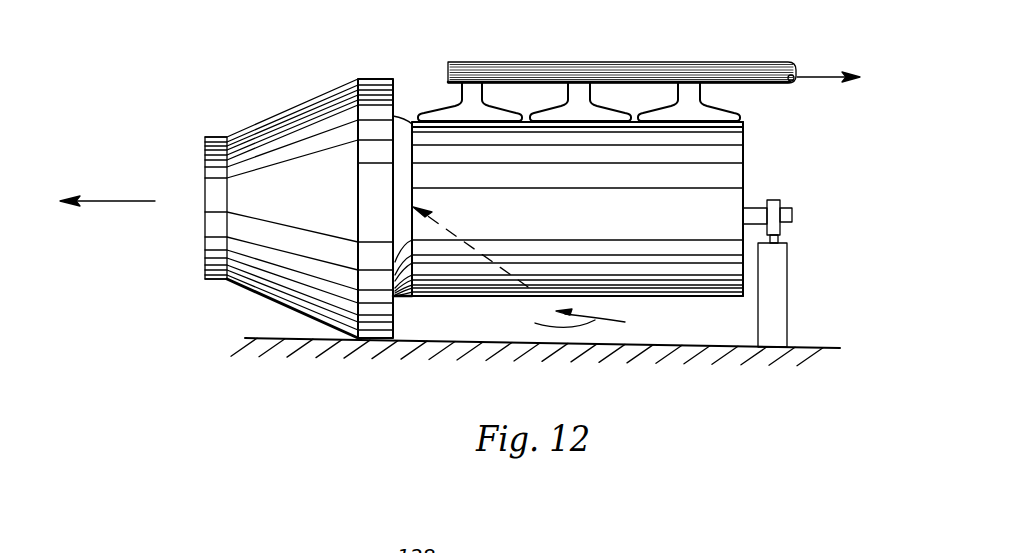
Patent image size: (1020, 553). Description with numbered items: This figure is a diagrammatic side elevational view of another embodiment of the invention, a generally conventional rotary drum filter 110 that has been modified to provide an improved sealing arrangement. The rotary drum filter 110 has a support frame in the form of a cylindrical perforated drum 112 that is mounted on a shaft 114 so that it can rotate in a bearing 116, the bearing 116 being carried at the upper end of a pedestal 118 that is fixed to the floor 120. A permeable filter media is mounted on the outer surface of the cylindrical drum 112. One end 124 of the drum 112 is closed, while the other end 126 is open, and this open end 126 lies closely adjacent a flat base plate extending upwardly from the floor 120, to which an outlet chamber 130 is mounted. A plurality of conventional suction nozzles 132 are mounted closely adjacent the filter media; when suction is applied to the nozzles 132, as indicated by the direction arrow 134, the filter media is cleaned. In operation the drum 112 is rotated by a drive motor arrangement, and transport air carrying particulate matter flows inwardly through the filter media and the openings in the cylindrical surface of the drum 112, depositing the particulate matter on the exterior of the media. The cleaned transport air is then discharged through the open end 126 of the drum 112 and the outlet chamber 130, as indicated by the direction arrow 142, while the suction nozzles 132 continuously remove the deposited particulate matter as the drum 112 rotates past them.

The rotary drum filter 110 is at (406, 74).
The cylindrical perforated drum 112 is at (743, 131).
The shaft 114 is at (792, 215).
The bearing 116 is at (773, 200).
The pedestal 118 is at (775, 316).
The floor 120 is at (832, 346).
The closed end of the cylindrical drum 124 is at (745, 172).
The open end of the cylindrical drum 126 is at (413, 176).
The outlet chamber 130 is at (276, 140).
The suction nozzles 132 is at (577, 98).
The direction arrow 134 is at (823, 79).
The direction arrow 142 is at (555, 322).